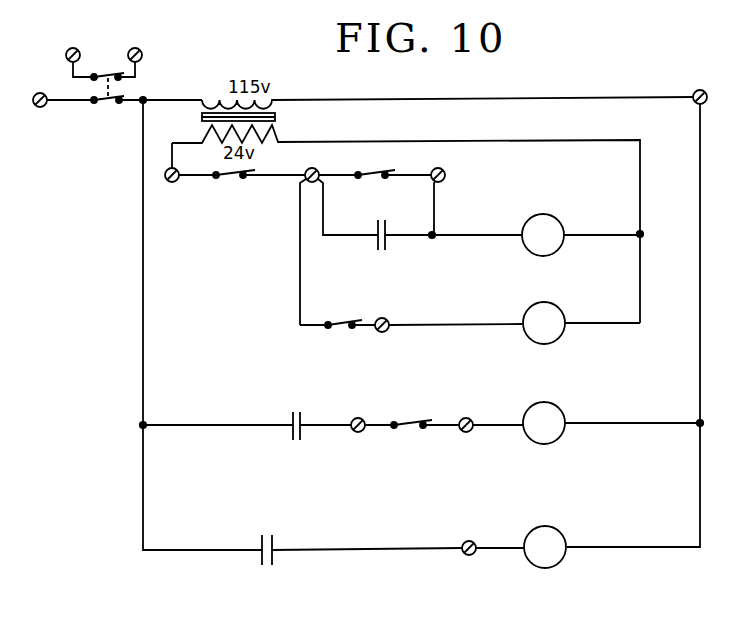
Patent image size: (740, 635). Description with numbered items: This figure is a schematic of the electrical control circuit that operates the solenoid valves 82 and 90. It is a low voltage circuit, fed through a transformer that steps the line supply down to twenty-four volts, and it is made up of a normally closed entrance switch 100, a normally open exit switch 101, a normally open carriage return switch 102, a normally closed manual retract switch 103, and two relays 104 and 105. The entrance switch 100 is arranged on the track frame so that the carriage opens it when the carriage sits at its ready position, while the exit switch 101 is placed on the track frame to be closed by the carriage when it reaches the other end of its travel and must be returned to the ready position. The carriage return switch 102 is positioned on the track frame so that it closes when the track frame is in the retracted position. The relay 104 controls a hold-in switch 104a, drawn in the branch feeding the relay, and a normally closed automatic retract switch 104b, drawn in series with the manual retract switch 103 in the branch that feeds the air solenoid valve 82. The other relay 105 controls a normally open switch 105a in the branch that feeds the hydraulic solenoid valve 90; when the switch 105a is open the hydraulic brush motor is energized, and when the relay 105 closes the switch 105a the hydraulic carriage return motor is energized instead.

The entrance switch 100 is at (233, 179).
The exit switch 101 is at (372, 166).
The carriage return switch 102 is at (342, 318).
The manual retract switch 103 is at (413, 418).
The relay 104 is at (562, 218).
The hold-in switch 104a is at (387, 240).
The automatic retract switch 104b is at (287, 430).
The relay 105 is at (563, 307).
The normally open switch 105a is at (273, 543).
The solenoid valve 82 is at (563, 408).
The solenoid valve 90 is at (563, 533).